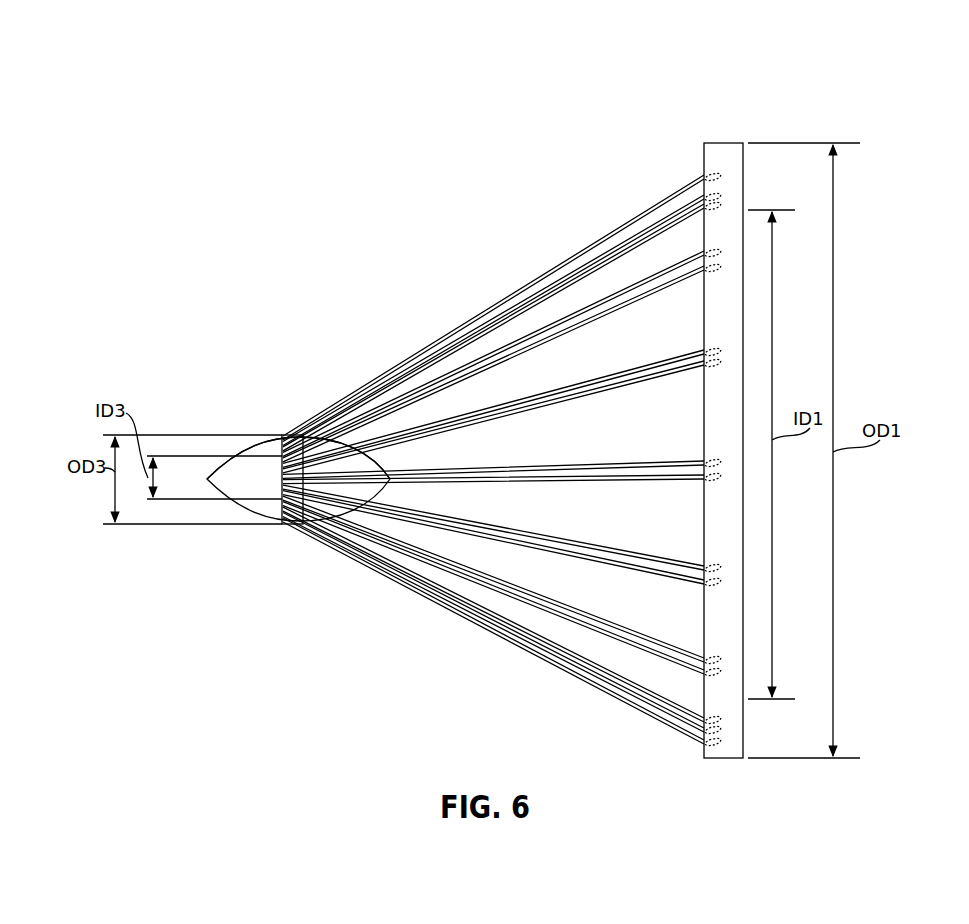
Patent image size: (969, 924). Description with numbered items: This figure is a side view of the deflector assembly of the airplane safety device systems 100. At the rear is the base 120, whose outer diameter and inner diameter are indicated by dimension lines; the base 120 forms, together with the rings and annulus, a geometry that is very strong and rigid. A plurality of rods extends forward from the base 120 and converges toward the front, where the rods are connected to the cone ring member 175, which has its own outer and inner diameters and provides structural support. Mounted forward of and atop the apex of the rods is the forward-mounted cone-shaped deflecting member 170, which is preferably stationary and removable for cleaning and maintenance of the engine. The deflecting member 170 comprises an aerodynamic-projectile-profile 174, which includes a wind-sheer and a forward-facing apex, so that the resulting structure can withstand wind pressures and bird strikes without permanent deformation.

The airplane safety device systems 100 is at (526, 145).
The base 120 is at (760, 590).
The forward-mounted cone-shaped deflecting member 170 is at (265, 500).
The aerodynamic-projectile-profile 174 is at (222, 478).
The cone ring member 175 is at (255, 473).